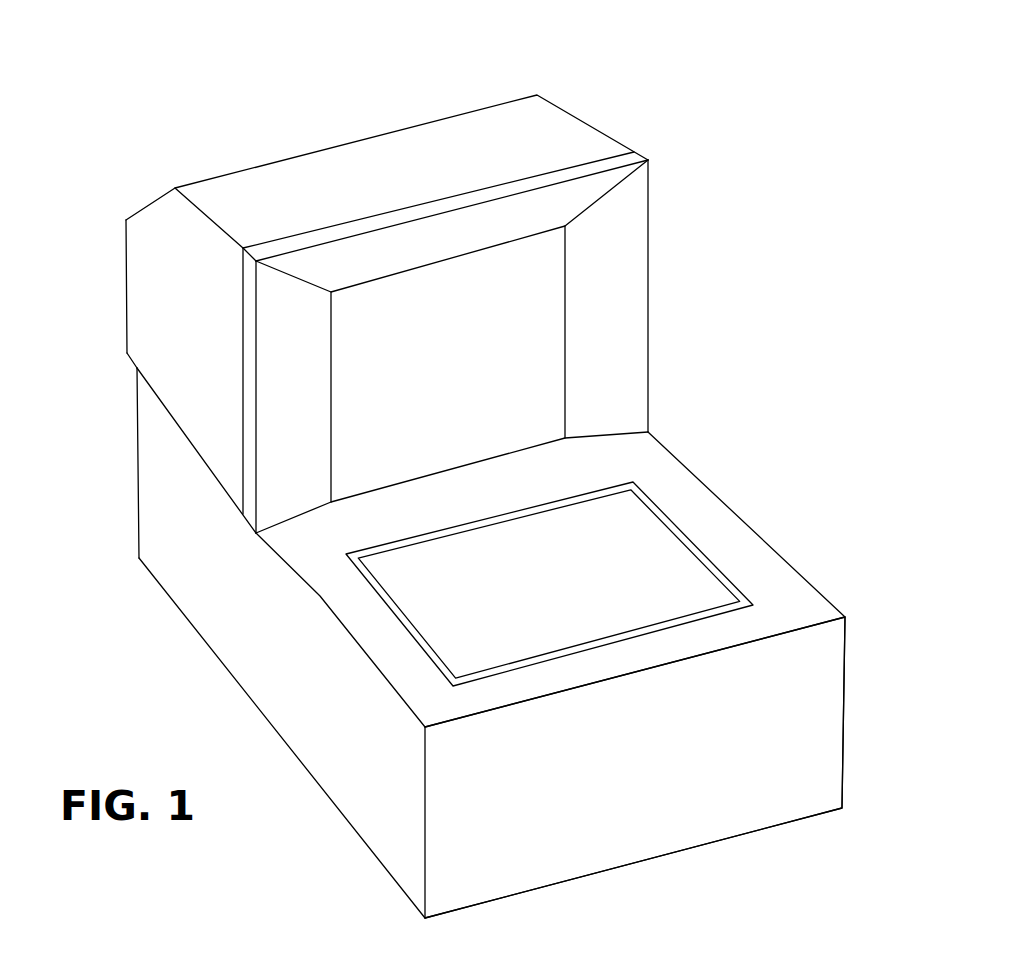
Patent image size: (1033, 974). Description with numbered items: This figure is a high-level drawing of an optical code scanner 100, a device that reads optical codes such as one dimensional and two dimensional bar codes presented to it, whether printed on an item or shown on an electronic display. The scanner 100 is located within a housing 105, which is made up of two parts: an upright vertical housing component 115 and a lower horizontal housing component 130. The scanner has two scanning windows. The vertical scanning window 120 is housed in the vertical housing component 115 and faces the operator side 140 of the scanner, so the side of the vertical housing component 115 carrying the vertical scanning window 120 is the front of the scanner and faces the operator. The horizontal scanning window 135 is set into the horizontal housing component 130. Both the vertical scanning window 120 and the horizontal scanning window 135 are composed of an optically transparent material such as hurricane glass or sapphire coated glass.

The optical code scanner 100 is at (158, 60).
The housing 105 is at (160, 502).
The vertical housing component 115 is at (553, 130).
The vertical scanning window 120 is at (508, 312).
The horizontal housing component 130 is at (683, 493).
The horizontal scanning window 135 is at (652, 575).
The operator side 140 is at (655, 720).